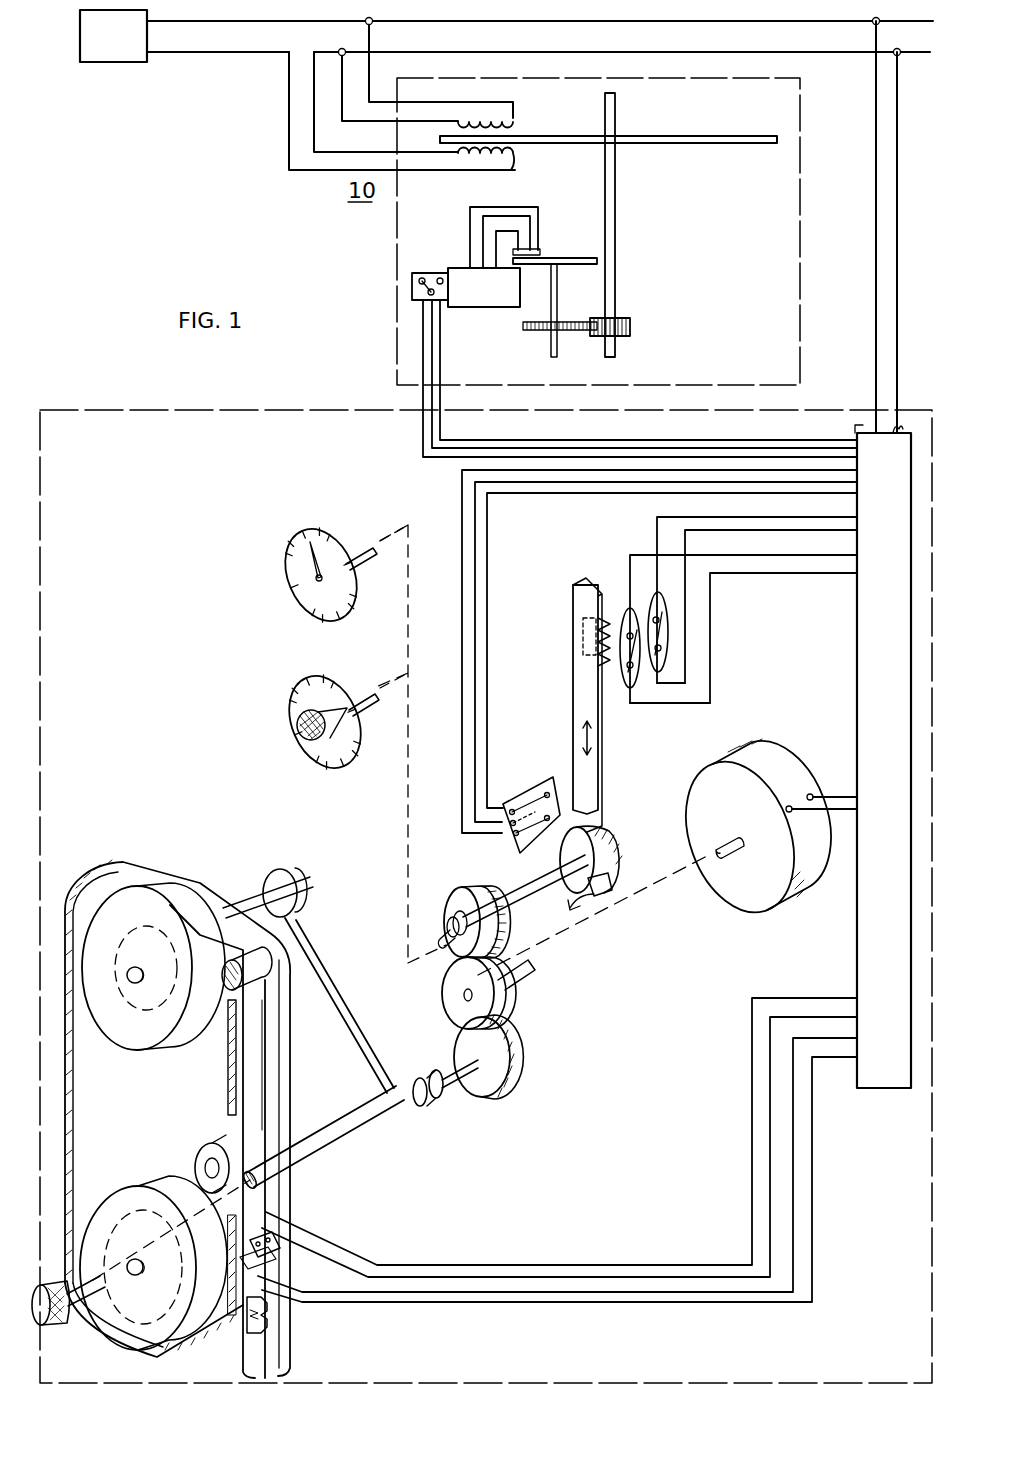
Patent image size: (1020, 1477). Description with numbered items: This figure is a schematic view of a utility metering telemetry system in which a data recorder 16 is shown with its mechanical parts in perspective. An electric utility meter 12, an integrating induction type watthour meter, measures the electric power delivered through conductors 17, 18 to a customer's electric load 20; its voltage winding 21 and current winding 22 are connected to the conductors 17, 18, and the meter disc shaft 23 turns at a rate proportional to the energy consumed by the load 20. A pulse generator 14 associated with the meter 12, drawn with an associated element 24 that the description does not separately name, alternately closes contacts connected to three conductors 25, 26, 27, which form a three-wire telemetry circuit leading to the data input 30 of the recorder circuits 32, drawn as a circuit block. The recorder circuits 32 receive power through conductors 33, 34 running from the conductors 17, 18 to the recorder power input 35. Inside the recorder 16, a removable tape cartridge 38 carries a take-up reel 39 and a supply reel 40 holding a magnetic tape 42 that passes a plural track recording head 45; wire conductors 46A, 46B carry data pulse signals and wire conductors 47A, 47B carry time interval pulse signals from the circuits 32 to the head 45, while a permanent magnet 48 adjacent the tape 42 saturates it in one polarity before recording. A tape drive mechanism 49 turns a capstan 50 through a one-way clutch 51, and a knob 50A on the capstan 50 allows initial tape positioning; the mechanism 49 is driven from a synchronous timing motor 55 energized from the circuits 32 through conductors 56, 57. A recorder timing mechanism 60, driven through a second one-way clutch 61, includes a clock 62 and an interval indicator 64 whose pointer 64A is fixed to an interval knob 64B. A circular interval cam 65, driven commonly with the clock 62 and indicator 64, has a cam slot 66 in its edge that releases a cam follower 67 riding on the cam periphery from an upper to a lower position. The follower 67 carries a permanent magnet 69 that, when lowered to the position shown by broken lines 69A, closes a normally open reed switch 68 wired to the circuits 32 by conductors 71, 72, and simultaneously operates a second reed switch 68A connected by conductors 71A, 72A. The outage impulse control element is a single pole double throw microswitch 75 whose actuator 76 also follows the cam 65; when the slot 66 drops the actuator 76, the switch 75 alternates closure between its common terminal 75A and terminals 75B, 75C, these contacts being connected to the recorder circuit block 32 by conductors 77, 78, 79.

The electric utility meter 12 is at (799, 244).
The pulse generator 14 is at (496, 300).
The data recorder 16 is at (232, 407).
The conductor 17 is at (598, 22).
The conductor 18 is at (694, 24).
The electric load 20 is at (126, 48).
The voltage winding 21 is at (513, 121).
The current winding 22 is at (515, 158).
The meter disc shaft 23 is at (616, 194).
The electromagnet 24 is at (577, 228).
The conductor 25 is at (508, 440).
The conductor 26 is at (572, 448).
The conductor 27 is at (632, 456).
The data input 30 is at (859, 435).
The recorder circuits 32 is at (898, 676).
The conductor 33 is at (874, 298).
The conductor 34 is at (898, 308).
The recorder power input 35 is at (886, 448).
The tape cartridge 38 is at (162, 1126).
The take-up reel 39 is at (146, 1042).
The supply reel 40 is at (130, 1184).
The magnetic tape 42 is at (252, 1066).
The plural track recording head 45 is at (276, 1250).
The wire conductor 46A is at (475, 1294).
The wire conductor 46B is at (590, 1304).
The wire conductor 47A is at (429, 1264).
The wire conductor 47B is at (539, 1276).
The permanent magnet 48 is at (268, 1313).
The tape drive mechanism 49 is at (394, 1037).
The capstan 50 is at (300, 1166).
The knob 50A is at (46, 1317).
The one-way clutch 51 is at (438, 1106).
The synchronous timing motor 55 is at (736, 882).
The conductor 56 is at (840, 795).
The conductor 57 is at (825, 814).
The recorder timing mechanism 60 is at (645, 764).
The second one-way clutch 61 is at (450, 919).
The clock 62 is at (288, 578).
The interval indicator 64 is at (325, 684).
The pointer 64A is at (374, 720).
The interval knob 64B is at (297, 730).
The circular interval cam 65 is at (628, 846).
The cam slot 66 is at (604, 882).
The cam follower 67 is at (574, 704).
The reed switch 68 is at (634, 690).
The second reed switch 68A is at (666, 647).
The permanent magnet 69 is at (604, 616).
The broken lines 69A is at (595, 668).
The conductor 71 is at (774, 572).
The conductor 71A is at (774, 532).
The conductor 72 is at (818, 557).
The conductor 72A is at (658, 530).
The microswitch 75 is at (542, 782).
The common switch terminal 75A is at (508, 832).
The terminal 75B is at (517, 840).
The terminal 75C is at (512, 804).
The actuator 76 is at (550, 832).
The conductor 77 is at (456, 502).
The conductor 78 is at (474, 530).
The conductor 79 is at (486, 568).